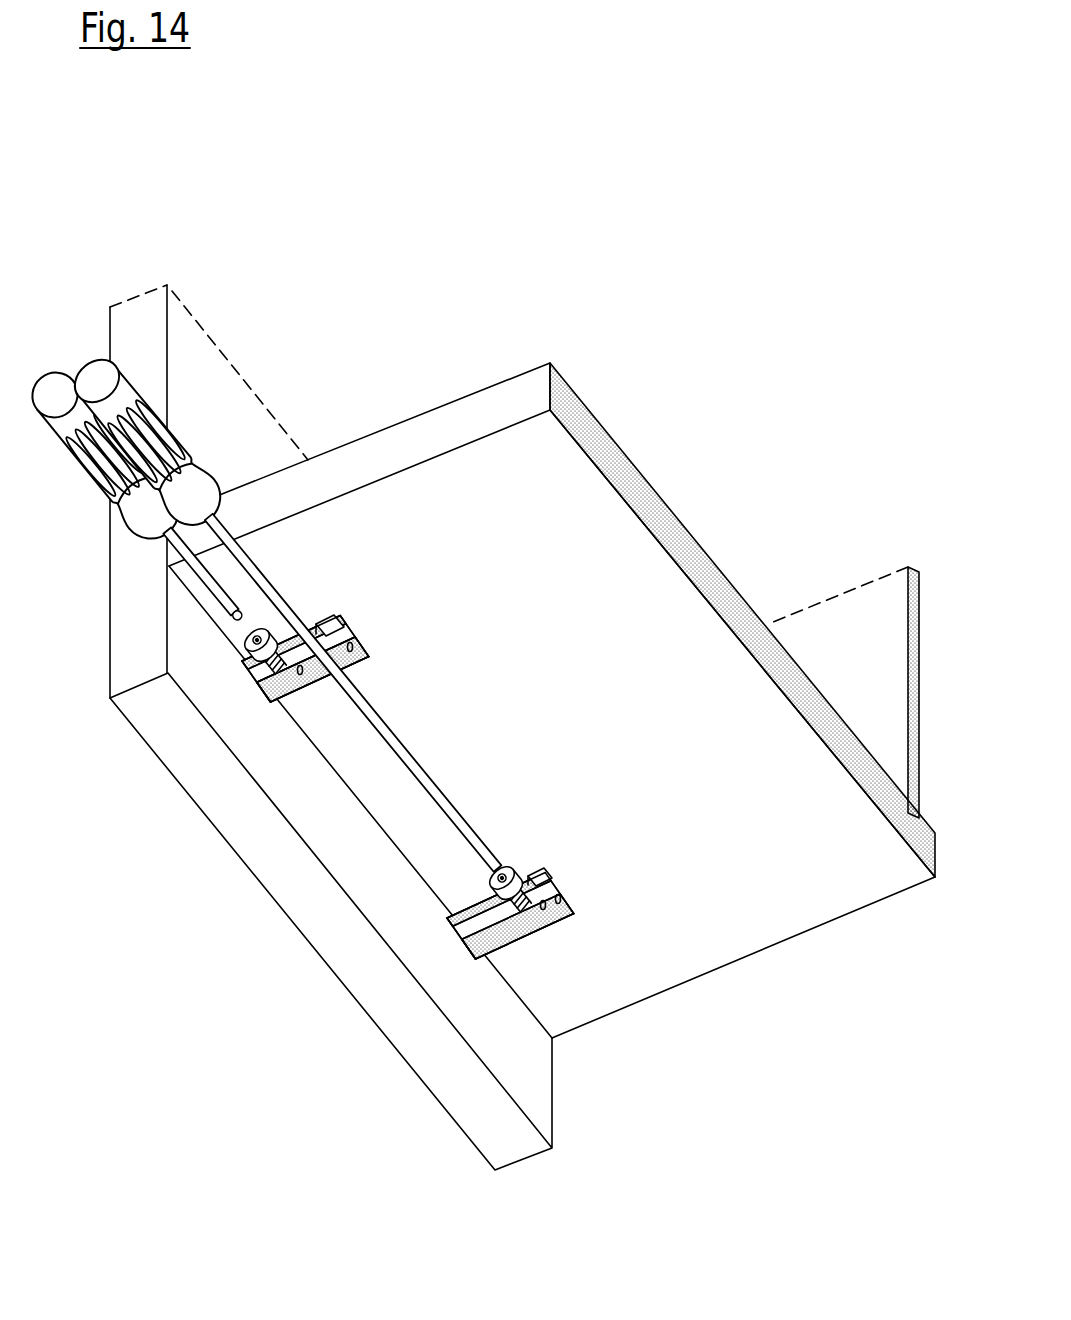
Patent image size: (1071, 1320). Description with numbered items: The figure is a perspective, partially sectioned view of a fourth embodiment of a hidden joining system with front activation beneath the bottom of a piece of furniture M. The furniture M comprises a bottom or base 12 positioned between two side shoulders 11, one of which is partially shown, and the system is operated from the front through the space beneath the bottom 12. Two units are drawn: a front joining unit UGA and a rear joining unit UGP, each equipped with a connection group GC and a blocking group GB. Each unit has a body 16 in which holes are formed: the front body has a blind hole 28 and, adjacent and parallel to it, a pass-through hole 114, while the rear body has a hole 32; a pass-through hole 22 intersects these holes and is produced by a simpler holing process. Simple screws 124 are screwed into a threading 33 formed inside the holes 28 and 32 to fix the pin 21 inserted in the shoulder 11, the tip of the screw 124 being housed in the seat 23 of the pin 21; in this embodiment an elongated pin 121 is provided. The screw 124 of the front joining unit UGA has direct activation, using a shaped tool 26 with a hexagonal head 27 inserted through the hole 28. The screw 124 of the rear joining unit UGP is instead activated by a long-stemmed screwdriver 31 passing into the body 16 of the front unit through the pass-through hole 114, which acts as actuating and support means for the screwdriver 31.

The piece of furniture M is at (530, 613).
The side shoulder 11 is at (165, 297).
The bottom or base 12 is at (818, 915).
The body 16 is at (313, 697).
The pin 21 is at (273, 697).
The hole 22 is at (366, 656).
The seat 23 is at (285, 700).
The shaped tool 26 is at (222, 600).
The hexagonal head 27 is at (237, 618).
The hole 28 is at (268, 630).
The long-stemmed screwdriver 31 is at (415, 762).
The hole 32 is at (515, 895).
The threading 33 is at (250, 698).
The pass-through hole 114 is at (318, 620).
The elongated pin 121 is at (477, 957).
The screw 124 is at (245, 692).
The blocking group GB is at (238, 650).
The connection group GC is at (262, 697).
The front joining unit UGA is at (391, 831).
The rear joining unit UGP is at (553, 982).